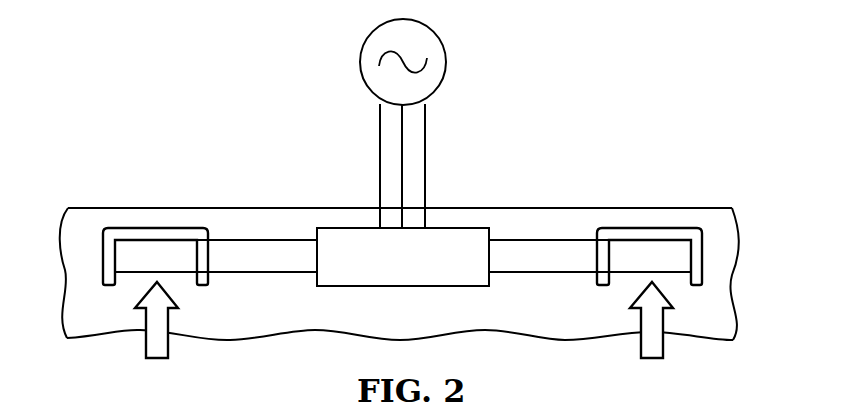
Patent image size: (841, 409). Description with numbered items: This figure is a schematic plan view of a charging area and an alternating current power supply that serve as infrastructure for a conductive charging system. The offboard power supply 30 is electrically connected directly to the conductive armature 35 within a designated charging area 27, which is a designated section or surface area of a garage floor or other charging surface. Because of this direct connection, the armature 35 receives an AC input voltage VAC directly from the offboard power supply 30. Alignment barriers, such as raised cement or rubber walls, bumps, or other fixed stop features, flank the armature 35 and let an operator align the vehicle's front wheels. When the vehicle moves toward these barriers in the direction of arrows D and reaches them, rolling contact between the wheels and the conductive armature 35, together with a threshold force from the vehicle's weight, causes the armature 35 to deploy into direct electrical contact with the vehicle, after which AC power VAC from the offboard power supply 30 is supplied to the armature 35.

The designated charging area 27 is at (537, 208).
The offboard power supply 30 is at (446, 62).
The conductive armature 35 is at (414, 270).
The AC input voltage VAC is at (425, 165).
The direction arrows D is at (168, 340).